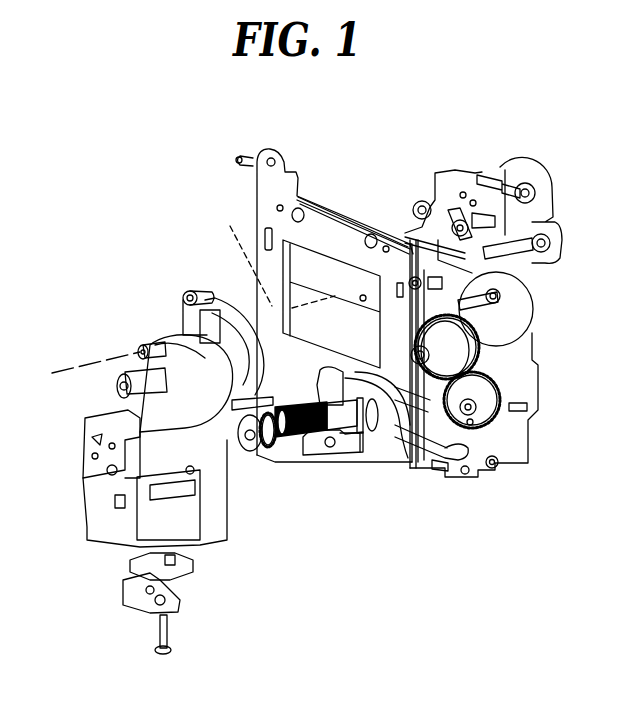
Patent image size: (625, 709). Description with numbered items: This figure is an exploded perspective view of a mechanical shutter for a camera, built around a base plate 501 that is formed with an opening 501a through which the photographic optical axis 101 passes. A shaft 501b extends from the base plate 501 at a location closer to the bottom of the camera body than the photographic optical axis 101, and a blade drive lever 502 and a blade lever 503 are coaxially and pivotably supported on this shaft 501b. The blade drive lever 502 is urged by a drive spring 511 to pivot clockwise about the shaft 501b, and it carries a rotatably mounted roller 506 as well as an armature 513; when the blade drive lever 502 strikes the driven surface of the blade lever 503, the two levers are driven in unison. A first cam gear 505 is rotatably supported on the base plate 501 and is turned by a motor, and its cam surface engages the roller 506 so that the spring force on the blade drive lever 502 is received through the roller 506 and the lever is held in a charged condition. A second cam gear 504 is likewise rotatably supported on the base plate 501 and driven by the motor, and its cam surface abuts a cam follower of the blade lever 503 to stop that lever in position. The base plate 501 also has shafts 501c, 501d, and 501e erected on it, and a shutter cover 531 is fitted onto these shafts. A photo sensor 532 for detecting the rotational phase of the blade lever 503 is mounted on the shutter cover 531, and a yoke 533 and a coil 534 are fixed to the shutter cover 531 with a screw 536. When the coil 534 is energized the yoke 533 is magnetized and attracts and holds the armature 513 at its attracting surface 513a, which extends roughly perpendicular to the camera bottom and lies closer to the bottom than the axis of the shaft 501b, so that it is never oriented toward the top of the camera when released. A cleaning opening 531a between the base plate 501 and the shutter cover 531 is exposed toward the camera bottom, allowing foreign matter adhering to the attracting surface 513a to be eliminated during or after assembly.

The photographic optical axis 101 is at (238, 250).
The base plate 501 is at (348, 243).
The opening 501a is at (317, 265).
The shaft 501b is at (435, 468).
The shaft 501c is at (482, 173).
The shaft 501d is at (417, 235).
The shaft 501e is at (492, 468).
The blade drive lever 502 is at (313, 400).
The blade lever 503 is at (397, 440).
The second cam gear 504 is at (480, 395).
The first cam gear 505 is at (478, 320).
The roller 506 is at (330, 380).
The drive spring 511 is at (283, 440).
The armature 513 is at (303, 460).
The attracting surface 513a is at (330, 457).
The shutter cover 531 is at (118, 403).
The cleaning opening 531a is at (100, 523).
The photo sensor 532 is at (250, 312).
The yoke 533 is at (183, 570).
The coil 534 is at (123, 592).
The screw 536 is at (170, 633).